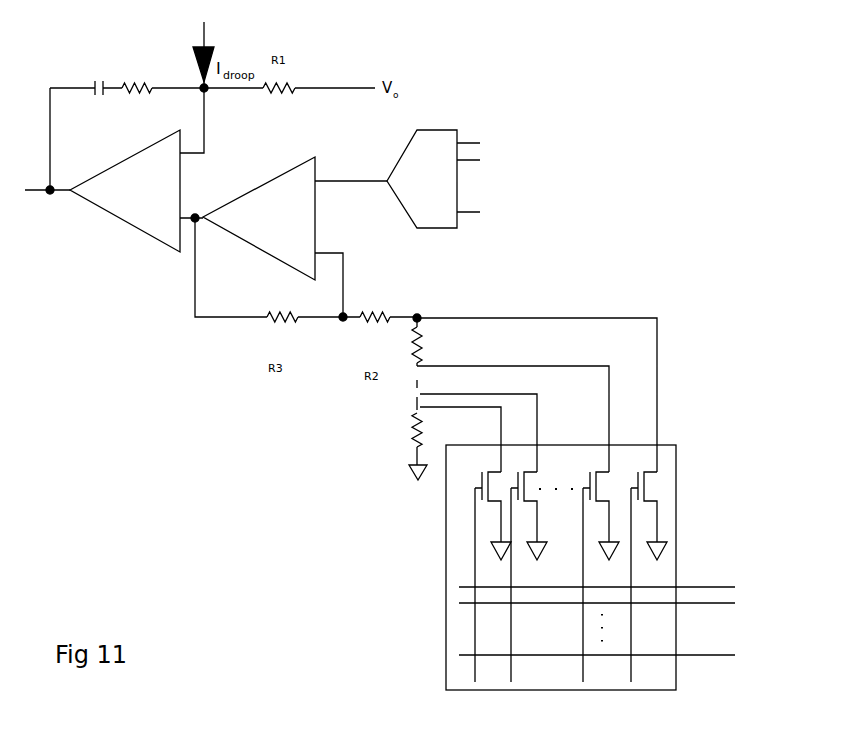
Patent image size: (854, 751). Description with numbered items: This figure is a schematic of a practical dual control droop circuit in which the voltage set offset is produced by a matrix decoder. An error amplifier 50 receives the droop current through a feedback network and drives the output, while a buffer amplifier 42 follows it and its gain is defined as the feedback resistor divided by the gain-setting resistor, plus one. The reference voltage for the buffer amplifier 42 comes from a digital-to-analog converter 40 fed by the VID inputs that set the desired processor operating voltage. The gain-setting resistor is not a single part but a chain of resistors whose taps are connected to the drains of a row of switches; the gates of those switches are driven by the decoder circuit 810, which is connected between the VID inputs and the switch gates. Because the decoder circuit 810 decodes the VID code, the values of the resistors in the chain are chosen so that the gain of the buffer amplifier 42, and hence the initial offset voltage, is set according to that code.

The DAC 40 is at (445, 122).
The buffer amplifier 42 is at (247, 296).
The error amplifier EA 50 is at (100, 218).
The decoder circuit 810 is at (423, 646).